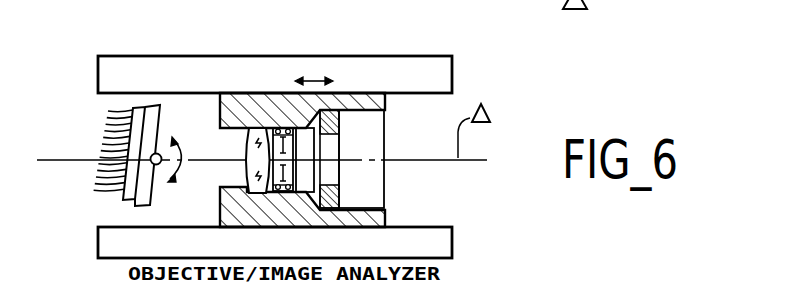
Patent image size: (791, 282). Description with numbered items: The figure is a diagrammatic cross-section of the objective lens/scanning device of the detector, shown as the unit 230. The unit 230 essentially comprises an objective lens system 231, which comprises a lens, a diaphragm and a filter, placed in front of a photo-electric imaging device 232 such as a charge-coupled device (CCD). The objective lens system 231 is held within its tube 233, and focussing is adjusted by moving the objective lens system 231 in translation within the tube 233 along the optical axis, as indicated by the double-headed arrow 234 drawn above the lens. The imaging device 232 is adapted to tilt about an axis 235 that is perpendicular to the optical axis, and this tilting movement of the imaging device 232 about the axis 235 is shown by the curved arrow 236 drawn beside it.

The unit 230 is at (80, 113).
The objective lens system 231 is at (371, 100).
The photo-electric imaging device 232 is at (132, 204).
The tube 233 is at (451, 240).
The arrow 234 is at (315, 78).
The axis 235 is at (160, 155).
The arrow 236 is at (181, 169).